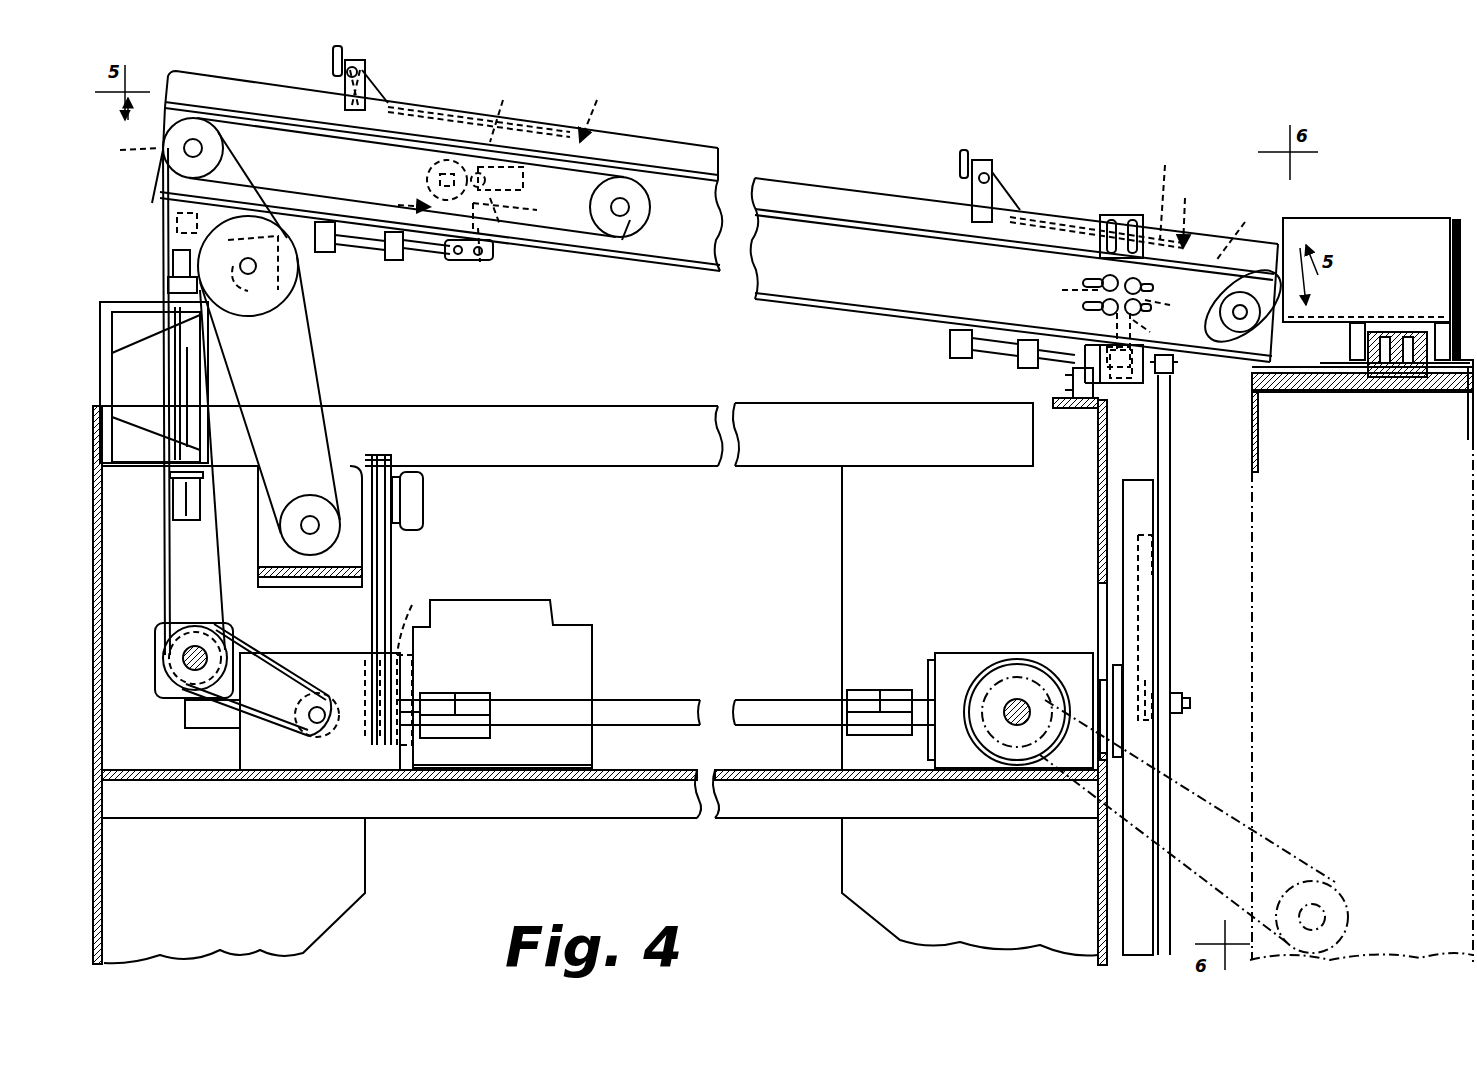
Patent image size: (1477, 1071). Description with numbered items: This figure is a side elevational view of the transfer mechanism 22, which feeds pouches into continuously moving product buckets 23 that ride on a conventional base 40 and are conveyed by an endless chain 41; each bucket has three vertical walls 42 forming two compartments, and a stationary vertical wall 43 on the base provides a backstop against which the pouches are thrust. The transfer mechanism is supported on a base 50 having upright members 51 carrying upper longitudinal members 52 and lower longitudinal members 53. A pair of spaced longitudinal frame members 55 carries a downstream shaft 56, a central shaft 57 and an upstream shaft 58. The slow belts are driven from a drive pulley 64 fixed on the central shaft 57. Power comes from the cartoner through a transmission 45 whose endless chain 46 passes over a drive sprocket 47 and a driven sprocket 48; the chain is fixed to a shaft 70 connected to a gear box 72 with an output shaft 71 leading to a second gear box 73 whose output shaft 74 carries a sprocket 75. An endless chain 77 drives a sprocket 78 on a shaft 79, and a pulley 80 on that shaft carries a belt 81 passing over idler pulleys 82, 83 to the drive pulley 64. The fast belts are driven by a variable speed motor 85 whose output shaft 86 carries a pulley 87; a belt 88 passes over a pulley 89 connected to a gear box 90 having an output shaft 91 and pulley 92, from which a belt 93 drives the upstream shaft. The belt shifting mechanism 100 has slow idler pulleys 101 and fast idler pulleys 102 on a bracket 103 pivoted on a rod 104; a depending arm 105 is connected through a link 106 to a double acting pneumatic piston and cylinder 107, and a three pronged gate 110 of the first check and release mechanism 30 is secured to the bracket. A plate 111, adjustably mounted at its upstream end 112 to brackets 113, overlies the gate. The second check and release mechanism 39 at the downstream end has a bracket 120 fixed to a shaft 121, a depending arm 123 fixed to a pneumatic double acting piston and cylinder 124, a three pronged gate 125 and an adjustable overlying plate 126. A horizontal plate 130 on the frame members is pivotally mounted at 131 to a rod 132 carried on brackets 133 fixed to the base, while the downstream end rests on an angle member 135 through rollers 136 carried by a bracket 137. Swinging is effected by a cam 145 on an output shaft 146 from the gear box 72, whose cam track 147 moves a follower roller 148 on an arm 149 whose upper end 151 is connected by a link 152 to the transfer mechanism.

The transfer mechanism 22 is at (1025, 80).
The product buckets 23 is at (1395, 215).
The first check and release mechanism 30 is at (612, 122).
The second check and release mechanism 39 is at (1183, 212).
The base 40 is at (1330, 410).
The endless chain 41 is at (1420, 375).
The vertical walls 42 is at (1366, 270).
The stationary vertical wall 43 is at (1460, 215).
The transmission 45 is at (1268, 838).
The endless chain 46 is at (1252, 790).
The drive sprocket 47 is at (1340, 900).
The driven sprocket 48 is at (1020, 680).
The base 50 is at (670, 400).
The upright members 51 is at (104, 885).
The upper longitudinal members 52 is at (680, 437).
The lower longitudinal members 53 is at (600, 714).
The longitudinal frame members 55 is at (715, 293).
The downstream shaft 56 is at (1248, 330).
The central shaft 57 is at (632, 210).
The upstream shaft 58 is at (205, 150).
The drive pulley 64 is at (640, 235).
The shaft 70 is at (1010, 727).
The output shaft 71 is at (700, 710).
The gear box 72 is at (955, 660).
The second gear box 73 is at (320, 711).
The output shaft 74 is at (325, 700).
The sprocket 75 is at (310, 735).
The endless chain 77 is at (288, 668).
The sprocket 78 is at (195, 620).
The shaft 79 is at (190, 670).
The pulley 80 is at (208, 668).
The belt 81 is at (580, 200).
The idler pulley 82 is at (290, 276).
The idler pulley 83 is at (132, 162).
The variable speed motor 85 is at (502, 684).
The output shaft 86 is at (348, 655).
The pulley 87 is at (409, 619).
The belt 88 is at (385, 575).
The pulley 89 is at (392, 470).
The gear box 90 is at (350, 465).
The output shaft 91 is at (315, 505).
The pulley 92 is at (300, 575).
The belt 93 is at (250, 388).
The belt shifting mechanism 100 is at (394, 204).
The slow idler pulleys 101 is at (522, 215).
The fast idler pulleys 102 is at (427, 168).
The bracket 103 is at (512, 248).
The rod 104 is at (510, 107).
The depending arm 105 is at (492, 262).
The link 106 is at (460, 260).
The double acting pneumatic piston and cylinder 107 is at (340, 250).
The three pronged gate 110 is at (602, 103).
The plate 111 is at (450, 110).
The upstream end 112 is at (405, 68).
The brackets 113 is at (335, 78).
The bracket 120 is at (1145, 295).
The shaft 121 is at (1090, 297).
The depending arm 123 is at (1146, 340).
The pneumatic double acting piston and cylinder 124 is at (985, 350).
The three pronged gate 125 is at (1182, 229).
The adjustable overlying plate 126 is at (1071, 196).
The horizontal plate 130 is at (160, 203).
The pivotal mounting 131 is at (178, 250).
The rod 132 is at (185, 368).
The brackets 133 is at (130, 455).
The angle member 135 is at (1075, 410).
The rollers 136 is at (1068, 380).
The bracket 137 is at (1112, 395).
The cam 145 is at (1145, 505).
The output shaft 146 is at (1100, 692).
The cam track 147 is at (1160, 548).
The follower roller 148 is at (1165, 665).
The arm 149 is at (1165, 738).
The upper end 151 is at (1175, 395).
The link 152 is at (1165, 360).